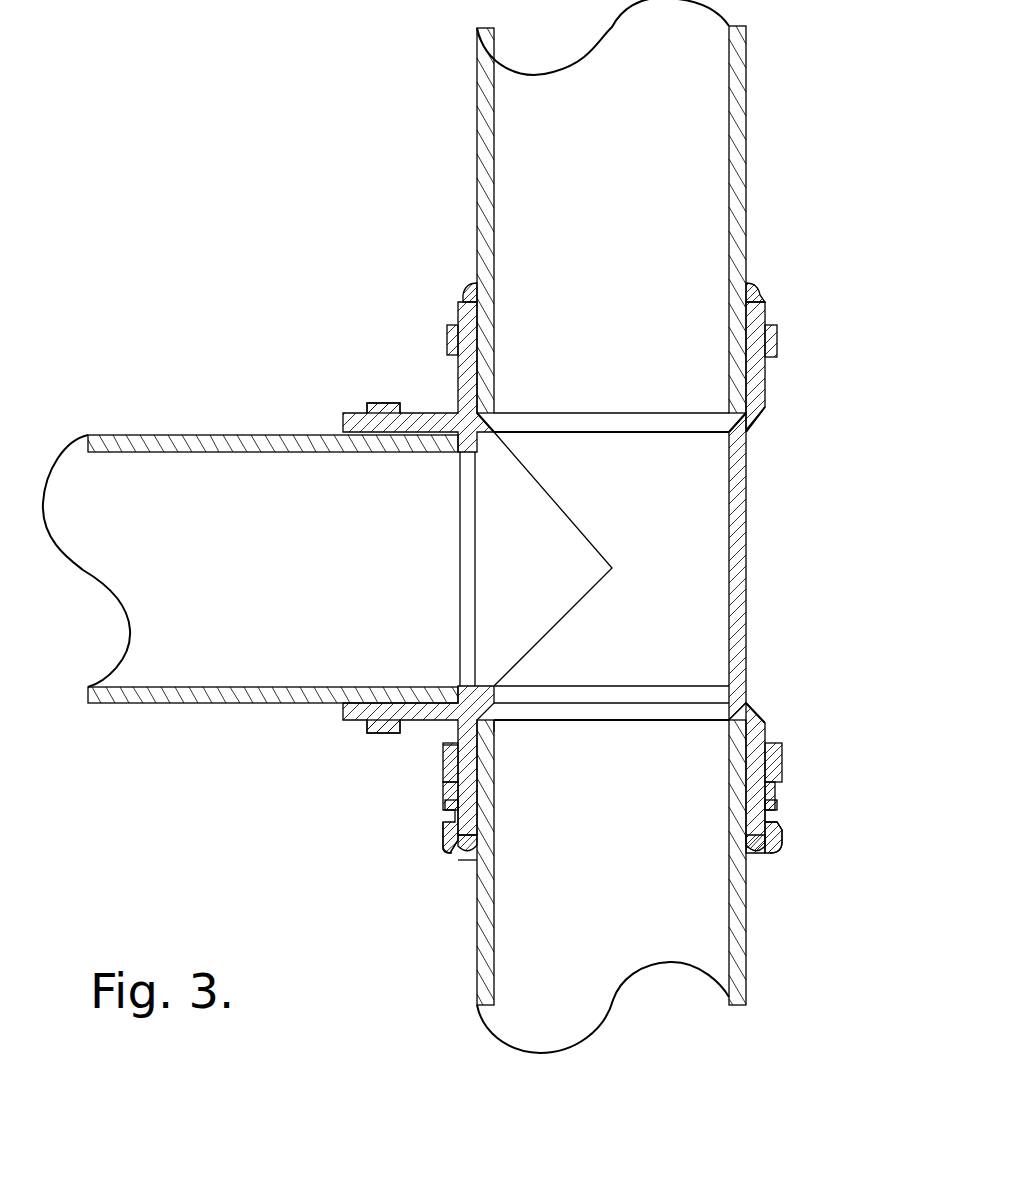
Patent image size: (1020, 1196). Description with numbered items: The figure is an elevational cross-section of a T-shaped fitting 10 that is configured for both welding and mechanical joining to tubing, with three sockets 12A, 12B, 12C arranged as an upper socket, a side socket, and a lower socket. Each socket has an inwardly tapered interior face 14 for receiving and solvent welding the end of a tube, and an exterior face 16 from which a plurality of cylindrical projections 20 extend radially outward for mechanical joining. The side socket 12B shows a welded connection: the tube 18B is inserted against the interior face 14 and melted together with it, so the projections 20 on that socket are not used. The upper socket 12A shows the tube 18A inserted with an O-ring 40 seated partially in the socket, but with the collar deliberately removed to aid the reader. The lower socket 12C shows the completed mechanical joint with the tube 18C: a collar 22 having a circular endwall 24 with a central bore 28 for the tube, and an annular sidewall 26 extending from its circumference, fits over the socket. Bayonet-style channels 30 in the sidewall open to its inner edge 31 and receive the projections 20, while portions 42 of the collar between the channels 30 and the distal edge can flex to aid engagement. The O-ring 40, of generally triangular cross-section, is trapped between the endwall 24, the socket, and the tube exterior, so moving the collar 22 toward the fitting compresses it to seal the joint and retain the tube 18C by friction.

The fitting 10 is at (750, 580).
The socket 12A is at (767, 398).
The socket 12B is at (417, 722).
The socket 12C is at (765, 730).
The interior face 14 is at (458, 373).
The exterior face 16 is at (470, 417).
The tube 18A is at (748, 66).
The tube 18B is at (148, 433).
The tube 18C is at (477, 985).
The projections 20 is at (447, 337).
The collar 22 is at (440, 838).
The endwall 24 is at (445, 852).
The sidewall 26 is at (447, 745).
The central bore 28 is at (463, 880).
The channels 30 is at (430, 818).
The inner edge 31 is at (496, 732).
The O-ring 40 is at (468, 288).
The portions 42 is at (445, 760).